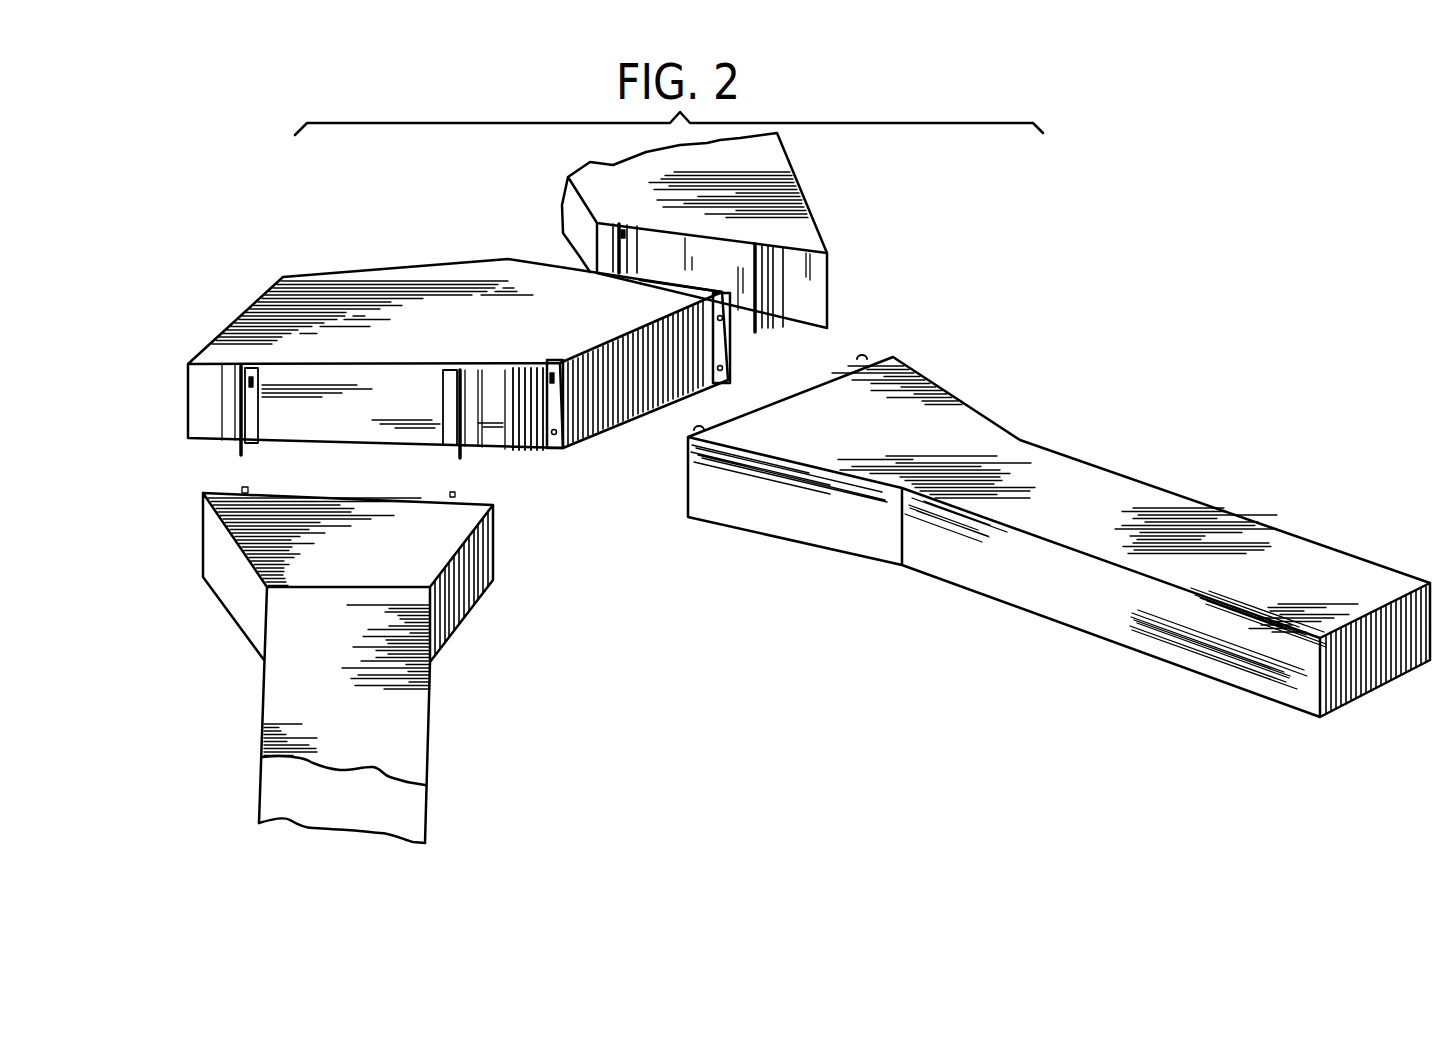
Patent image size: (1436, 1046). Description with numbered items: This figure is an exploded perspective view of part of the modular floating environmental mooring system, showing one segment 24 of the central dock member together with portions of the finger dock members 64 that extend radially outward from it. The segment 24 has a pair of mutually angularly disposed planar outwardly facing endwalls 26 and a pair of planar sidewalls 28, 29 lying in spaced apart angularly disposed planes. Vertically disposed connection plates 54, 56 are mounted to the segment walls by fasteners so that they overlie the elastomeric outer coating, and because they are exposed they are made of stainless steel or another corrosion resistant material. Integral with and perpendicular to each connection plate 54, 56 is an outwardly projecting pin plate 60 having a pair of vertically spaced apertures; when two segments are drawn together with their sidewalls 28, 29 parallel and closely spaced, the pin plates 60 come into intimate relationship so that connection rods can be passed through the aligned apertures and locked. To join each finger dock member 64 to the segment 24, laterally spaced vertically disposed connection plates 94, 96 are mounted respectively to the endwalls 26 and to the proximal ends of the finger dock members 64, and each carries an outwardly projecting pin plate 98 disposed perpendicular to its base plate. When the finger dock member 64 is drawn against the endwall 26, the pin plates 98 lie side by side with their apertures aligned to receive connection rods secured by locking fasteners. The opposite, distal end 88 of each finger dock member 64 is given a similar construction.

The segment 24 is at (548, 331).
The endwall 26 is at (529, 448).
The sidewall 28 is at (403, 394).
The sidewall 29 is at (696, 278).
The connection plate 54 is at (800, 298).
The connection plate 56 is at (612, 214).
The pin plate 60 is at (766, 325).
The finger dock member 64 is at (442, 730).
The distal end 88 is at (1358, 690).
The connection plate 94 is at (455, 378).
The connection plate 96 is at (255, 370).
The pin plate 98 is at (549, 358).